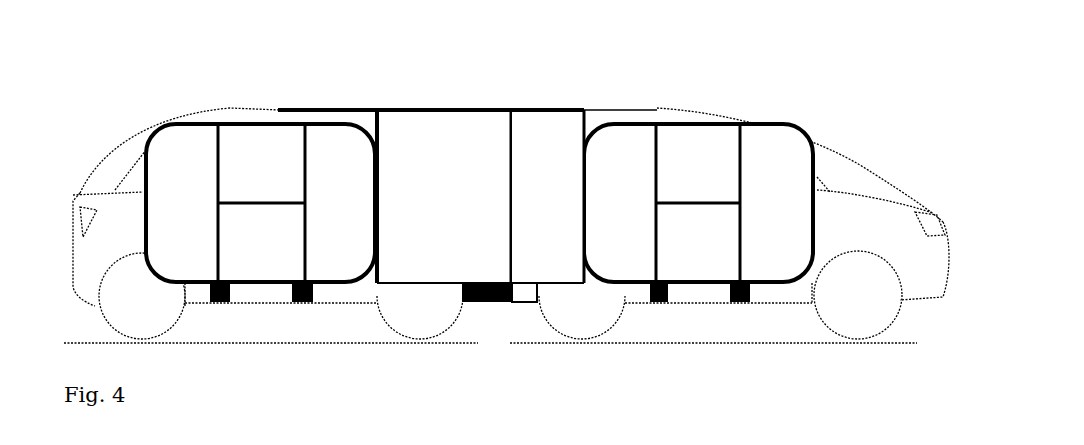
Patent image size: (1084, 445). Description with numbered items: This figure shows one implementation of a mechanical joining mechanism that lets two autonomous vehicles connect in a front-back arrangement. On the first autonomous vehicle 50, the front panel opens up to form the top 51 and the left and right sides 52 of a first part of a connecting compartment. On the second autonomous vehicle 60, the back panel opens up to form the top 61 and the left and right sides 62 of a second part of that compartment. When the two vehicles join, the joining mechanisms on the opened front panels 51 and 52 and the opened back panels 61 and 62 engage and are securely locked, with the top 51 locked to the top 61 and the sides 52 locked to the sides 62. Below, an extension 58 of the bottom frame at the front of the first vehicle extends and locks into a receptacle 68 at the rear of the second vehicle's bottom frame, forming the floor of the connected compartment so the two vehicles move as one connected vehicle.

The first autonomous vehicle 50 is at (128, 140).
The top of the first part of the connecting compartment 51 is at (353, 110).
The left and right sides of the first part of the connecting compartment 52 is at (444, 196).
The extension of the bottom frame 58 is at (500, 303).
The second autonomous vehicle 60 is at (847, 143).
The top of the second part of the connecting compartment 61 is at (567, 109).
The left and right sides of the second part of the connecting compartment 62 is at (548, 196).
The receptacle 68 is at (527, 304).